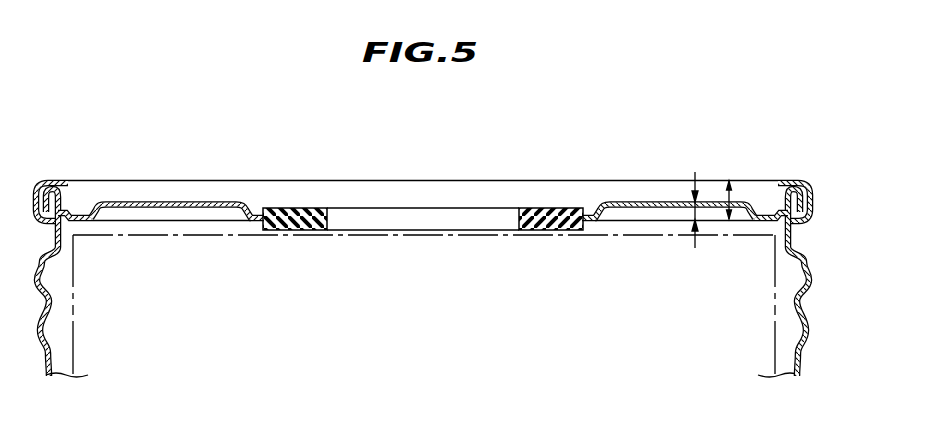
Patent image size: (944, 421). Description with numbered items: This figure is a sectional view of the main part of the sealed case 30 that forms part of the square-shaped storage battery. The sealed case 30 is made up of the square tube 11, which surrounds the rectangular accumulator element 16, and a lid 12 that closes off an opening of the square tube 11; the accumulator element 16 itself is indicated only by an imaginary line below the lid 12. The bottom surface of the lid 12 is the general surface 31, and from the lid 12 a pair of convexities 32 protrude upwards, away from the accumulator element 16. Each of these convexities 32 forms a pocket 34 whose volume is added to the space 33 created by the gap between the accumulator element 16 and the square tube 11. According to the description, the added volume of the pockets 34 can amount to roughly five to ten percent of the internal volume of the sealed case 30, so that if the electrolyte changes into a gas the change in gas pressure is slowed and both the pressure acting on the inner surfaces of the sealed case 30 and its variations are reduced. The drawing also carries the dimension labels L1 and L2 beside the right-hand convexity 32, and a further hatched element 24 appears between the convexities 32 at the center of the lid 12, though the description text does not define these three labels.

The square tube 11 is at (806, 295).
The lid 12 is at (236, 194).
The accumulator element 16 is at (73, 345).
The insulating gasket 24 is at (500, 206).
The sealed case 30 is at (808, 353).
The general surface 31 is at (677, 221).
The convexities 32 is at (172, 202).
The space 33 is at (784, 273).
The pockets 34 is at (220, 216).
The height L1 is at (732, 182).
The height L2 is at (699, 226).